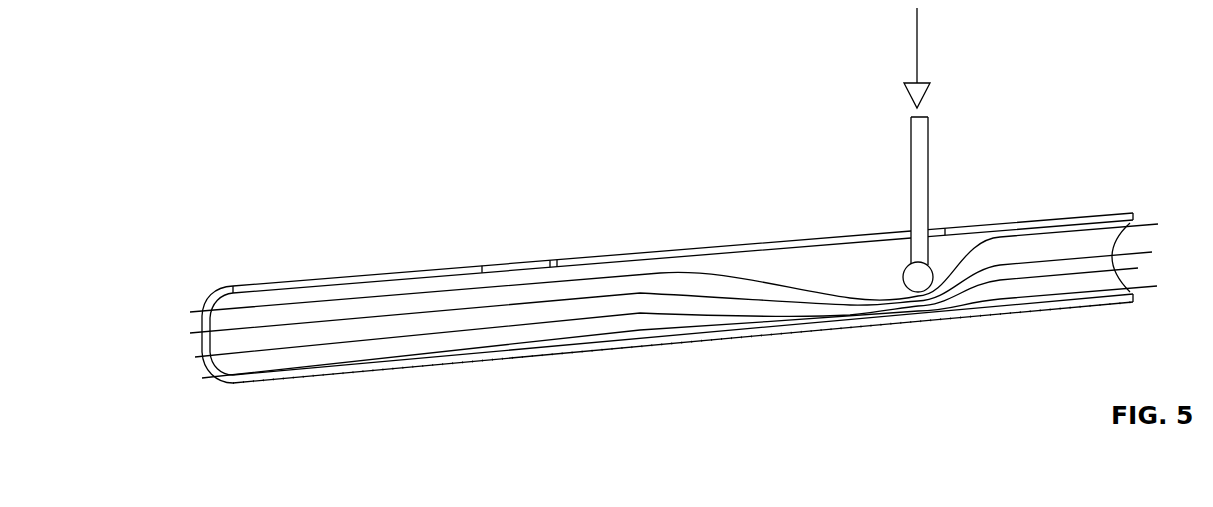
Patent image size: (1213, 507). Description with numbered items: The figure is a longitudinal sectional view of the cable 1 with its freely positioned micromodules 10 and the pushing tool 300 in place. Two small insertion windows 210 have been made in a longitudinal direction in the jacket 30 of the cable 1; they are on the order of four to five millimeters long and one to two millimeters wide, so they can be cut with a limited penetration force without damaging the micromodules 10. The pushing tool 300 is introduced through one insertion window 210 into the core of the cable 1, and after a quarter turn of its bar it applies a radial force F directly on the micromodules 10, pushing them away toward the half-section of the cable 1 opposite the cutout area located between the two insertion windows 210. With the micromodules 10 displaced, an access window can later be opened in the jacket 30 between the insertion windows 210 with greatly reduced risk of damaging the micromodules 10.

The cable 1 is at (355, 0).
The micromodules 10 is at (205, 378).
The jacket 30 is at (325, 370).
The insertion windows 210 is at (510, 270).
The pushing tool 300 is at (922, 195).